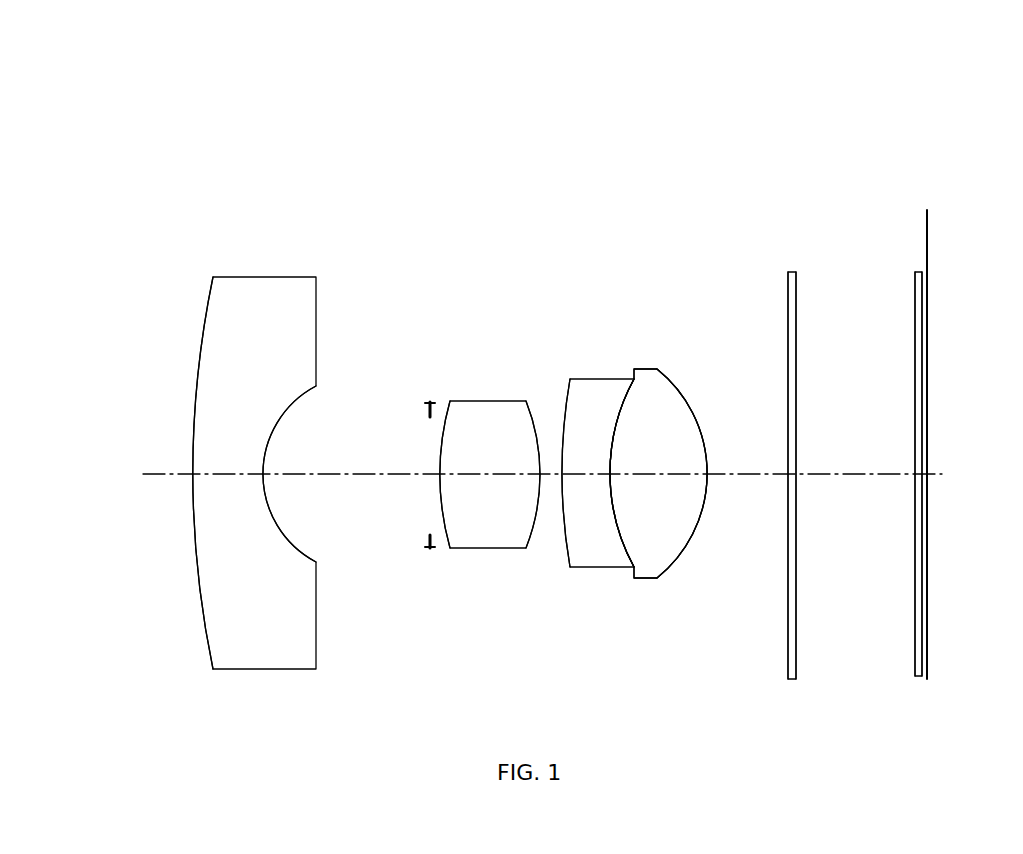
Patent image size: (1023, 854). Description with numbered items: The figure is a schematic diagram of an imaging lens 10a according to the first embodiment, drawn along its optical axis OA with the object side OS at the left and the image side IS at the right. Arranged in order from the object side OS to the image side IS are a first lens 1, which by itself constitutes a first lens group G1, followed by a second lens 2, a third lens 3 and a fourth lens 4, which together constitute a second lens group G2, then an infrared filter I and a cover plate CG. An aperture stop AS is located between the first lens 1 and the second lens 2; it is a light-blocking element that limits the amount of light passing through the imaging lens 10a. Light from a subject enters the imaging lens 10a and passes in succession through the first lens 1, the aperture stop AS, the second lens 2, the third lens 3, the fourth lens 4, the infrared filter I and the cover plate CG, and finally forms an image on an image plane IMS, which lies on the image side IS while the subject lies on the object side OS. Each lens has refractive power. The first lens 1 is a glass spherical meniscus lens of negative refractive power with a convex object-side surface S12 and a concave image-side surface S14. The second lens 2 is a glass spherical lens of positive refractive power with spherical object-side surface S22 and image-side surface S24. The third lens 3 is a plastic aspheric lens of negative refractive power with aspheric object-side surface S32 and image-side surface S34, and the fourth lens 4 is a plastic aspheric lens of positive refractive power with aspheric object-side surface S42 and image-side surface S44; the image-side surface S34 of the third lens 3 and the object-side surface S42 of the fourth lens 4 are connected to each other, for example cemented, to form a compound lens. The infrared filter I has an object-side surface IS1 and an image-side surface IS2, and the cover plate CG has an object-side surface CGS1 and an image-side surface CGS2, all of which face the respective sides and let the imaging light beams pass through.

The imaging lens 10a is at (87, 48).
The first lens group G1 is at (200, 70).
The second lens group G2 is at (200, 158).
The first lens 1 is at (265, 283).
The second lens 2 is at (485, 402).
The third lens 3 is at (597, 379).
The fourth lens 4 is at (648, 368).
The object side OS is at (82, 247).
The image side IS is at (1000, 245).
The optical axis OA is at (157, 468).
The aperture stop AS is at (432, 400).
The object-side surface of the first lens S12 is at (207, 634).
The image-side surface of the first lens S14 is at (313, 553).
The object-side surface of the second lens S22 is at (450, 549).
The image-side surface of the second lens S24 is at (526, 549).
The object-side surface of the third lens S32 is at (572, 566).
The image-side surface of the third lens S34 is at (628, 567).
The object-side surface of the fourth lens S42 is at (642, 579).
The image-side surface of the fourth lens S44 is at (676, 560).
The infrared filter I is at (790, 270).
The object-side surface of the infrared filter IS1 is at (788, 640).
The image-side surface of the infrared filter IS2 is at (797, 640).
The cover plate CG is at (918, 269).
The object-side surface of the cover plate CGS1 is at (914, 638).
The image-side surface of the cover plate CGS2 is at (924, 679).
The image plane IMS is at (930, 208).